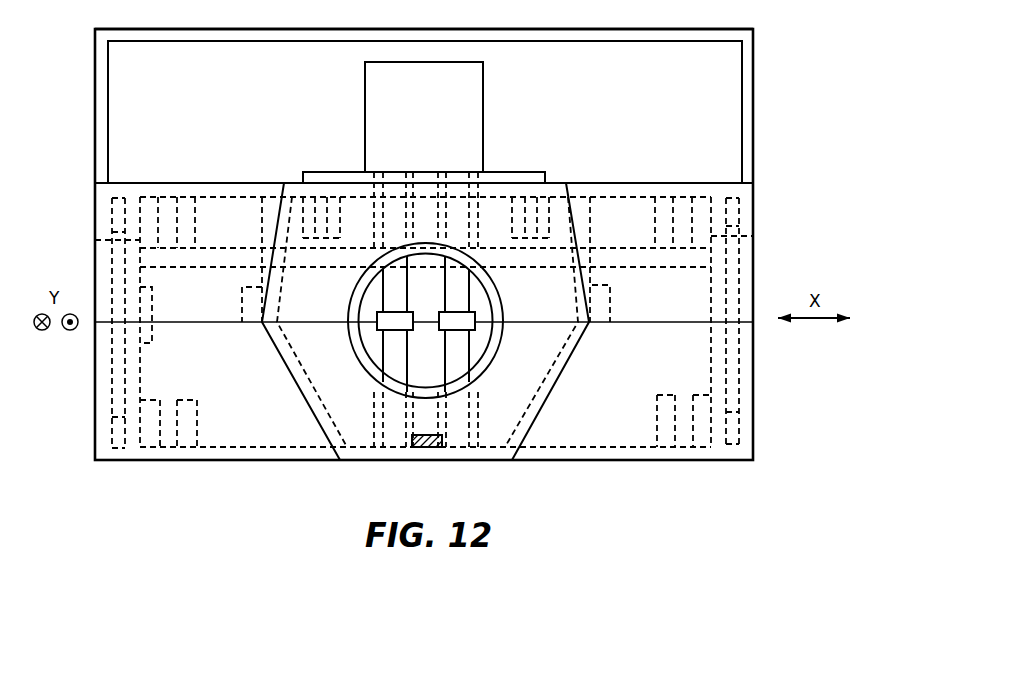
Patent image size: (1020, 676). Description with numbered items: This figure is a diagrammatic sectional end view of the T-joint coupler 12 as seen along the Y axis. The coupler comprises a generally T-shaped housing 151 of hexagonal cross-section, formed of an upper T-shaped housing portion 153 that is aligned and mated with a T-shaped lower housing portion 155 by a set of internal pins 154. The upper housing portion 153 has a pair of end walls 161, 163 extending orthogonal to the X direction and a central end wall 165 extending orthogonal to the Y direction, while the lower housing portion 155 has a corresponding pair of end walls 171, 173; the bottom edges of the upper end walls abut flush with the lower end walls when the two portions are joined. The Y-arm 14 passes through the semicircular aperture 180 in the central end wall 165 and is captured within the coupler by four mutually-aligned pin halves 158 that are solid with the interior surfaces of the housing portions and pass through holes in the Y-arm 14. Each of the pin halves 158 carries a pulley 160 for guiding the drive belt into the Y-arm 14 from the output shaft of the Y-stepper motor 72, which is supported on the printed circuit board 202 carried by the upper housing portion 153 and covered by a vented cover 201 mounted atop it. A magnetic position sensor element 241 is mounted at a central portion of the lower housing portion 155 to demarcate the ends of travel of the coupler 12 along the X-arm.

The T-joint coupler 12 is at (756, 76).
The vented cover 201 is at (543, 29).
The Y-stepper motor 72 is at (483, 88).
The T-shaped housing 151 is at (757, 186).
The printed circuit board 202 is at (540, 172).
The end wall 163 is at (753, 253).
The upper T-shaped housing portion 153 is at (753, 227).
The end wall 161 is at (95, 208).
The end wall 171 is at (95, 427).
The T-shaped lower housing portion 155 is at (753, 380).
The end wall 173 is at (707, 405).
The internal pins 154 is at (152, 302).
The central end wall 165 is at (313, 258).
The pin halves 158 is at (383, 293).
The Y-arm 14 is at (502, 302).
The semicircular aperture 180 is at (489, 367).
The pulley 160 is at (380, 331).
The magnetic position sensor element 241 is at (428, 447).